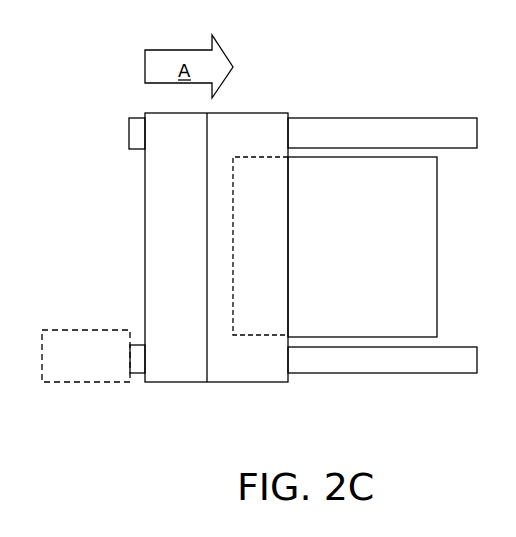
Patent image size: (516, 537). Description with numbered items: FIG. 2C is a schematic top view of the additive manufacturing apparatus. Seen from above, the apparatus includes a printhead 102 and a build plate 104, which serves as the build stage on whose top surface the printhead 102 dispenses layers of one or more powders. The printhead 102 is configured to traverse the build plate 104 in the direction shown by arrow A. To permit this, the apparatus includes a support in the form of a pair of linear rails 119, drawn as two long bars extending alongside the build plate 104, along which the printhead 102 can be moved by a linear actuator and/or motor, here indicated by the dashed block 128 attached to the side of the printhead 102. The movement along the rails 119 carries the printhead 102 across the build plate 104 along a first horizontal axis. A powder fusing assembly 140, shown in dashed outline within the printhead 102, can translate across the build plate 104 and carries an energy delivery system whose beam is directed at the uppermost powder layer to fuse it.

The printhead 102 is at (145, 260).
The build plate 104 is at (351, 263).
The linear rails 119 is at (340, 130).
The motor 128 is at (101, 367).
The powder fusing assembly 140 is at (250, 137).